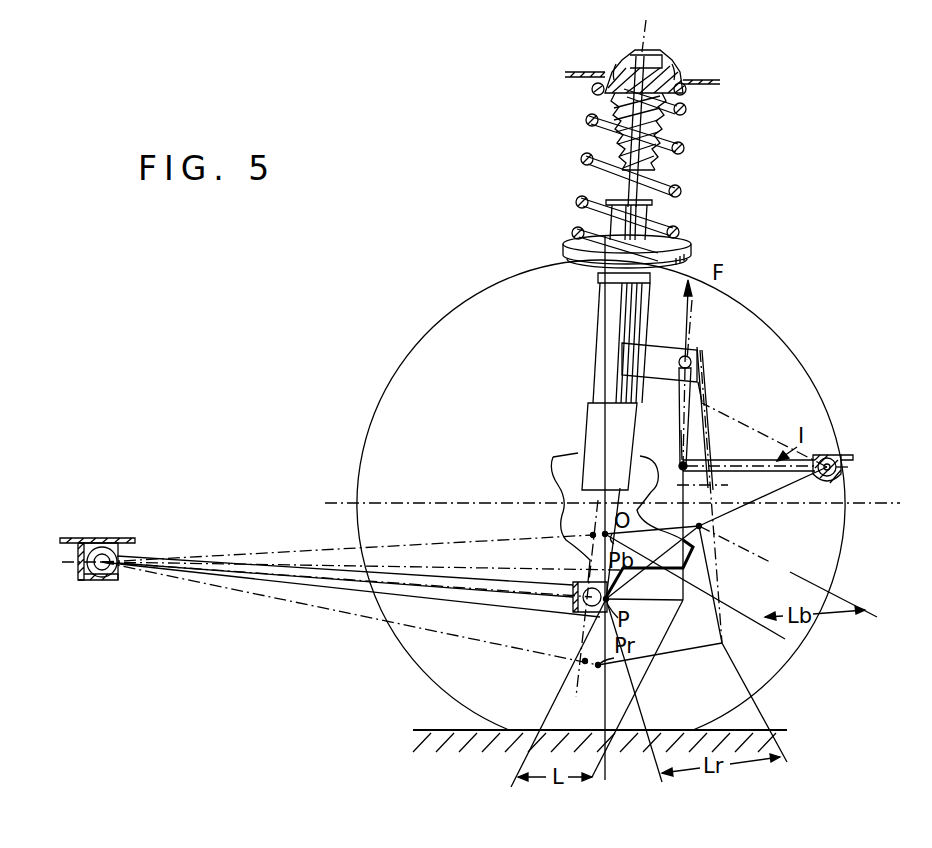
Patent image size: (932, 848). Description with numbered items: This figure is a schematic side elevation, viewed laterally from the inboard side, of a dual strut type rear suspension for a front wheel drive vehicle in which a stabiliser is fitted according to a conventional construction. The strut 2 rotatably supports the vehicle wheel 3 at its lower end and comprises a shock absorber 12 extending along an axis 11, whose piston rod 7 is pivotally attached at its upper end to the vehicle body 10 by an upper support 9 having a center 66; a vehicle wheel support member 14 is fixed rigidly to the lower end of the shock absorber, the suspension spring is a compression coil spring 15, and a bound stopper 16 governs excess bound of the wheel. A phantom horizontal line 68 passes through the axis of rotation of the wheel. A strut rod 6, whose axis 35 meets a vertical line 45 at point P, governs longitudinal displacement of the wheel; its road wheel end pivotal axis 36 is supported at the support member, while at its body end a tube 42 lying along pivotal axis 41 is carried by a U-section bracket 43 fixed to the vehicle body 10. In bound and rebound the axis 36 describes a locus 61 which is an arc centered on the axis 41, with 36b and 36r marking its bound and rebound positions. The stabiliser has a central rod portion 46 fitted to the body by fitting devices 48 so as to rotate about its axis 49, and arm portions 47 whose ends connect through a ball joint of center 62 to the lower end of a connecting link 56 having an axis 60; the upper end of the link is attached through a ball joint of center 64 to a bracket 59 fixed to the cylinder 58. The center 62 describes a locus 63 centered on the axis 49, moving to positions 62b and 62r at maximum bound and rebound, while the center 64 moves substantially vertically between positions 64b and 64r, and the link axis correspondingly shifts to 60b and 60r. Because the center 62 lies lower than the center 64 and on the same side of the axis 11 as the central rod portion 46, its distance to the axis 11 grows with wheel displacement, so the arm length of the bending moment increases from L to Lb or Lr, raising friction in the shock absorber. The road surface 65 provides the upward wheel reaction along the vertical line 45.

The strut 2 is at (690, 243).
The vehicle wheel 3 is at (787, 664).
The strut rod 6 is at (405, 592).
The piston rod 7 is at (625, 190).
The upper support 9 is at (674, 58).
The vehicle body 10 is at (714, 80).
The axis 11 is at (646, 35).
The shock absorber 12 is at (594, 334).
The vehicle wheel support member 14 is at (554, 478).
The compression coil spring 15 is at (590, 120).
The bound stopper 16 is at (664, 130).
The axis of the strut rod 35 is at (300, 582).
The pivotal axis 36 is at (584, 608).
The lower ball joint bump position 36b is at (590, 535).
The lower ball joint rebound position 36r is at (583, 664).
The pivotal axis 41 is at (98, 548).
The tube 42 is at (112, 575).
The U-section bracket 43 is at (94, 580).
The vertical line 45 is at (606, 762).
The central rod portion 46 is at (827, 477).
The arm portion 47 is at (752, 460).
The fitting device 48 is at (846, 455).
The axis 49 is at (850, 466).
The connecting link 56 is at (704, 420).
The cylinder 58 is at (596, 381).
The bracket 59 is at (660, 345).
The axis of the connecting link 60 is at (648, 508).
The knuckle joint bump position 60b is at (723, 488).
The knuckle joint rebound position 60r is at (752, 635).
The locus 61 is at (582, 688).
The center of the ball joint 62 is at (682, 466).
The bound position of center 62b is at (706, 405).
The rebound position of center 62r is at (702, 530).
The locus 63 is at (703, 394).
The center of the ball joint 64 is at (691, 362).
The connecting link bump position 64b is at (693, 305).
The connecting link rebound position 64r is at (682, 440).
The road surface 65 is at (785, 729).
The center of the upper support 66 is at (612, 72).
The phantom horizontal line 68 is at (873, 502).